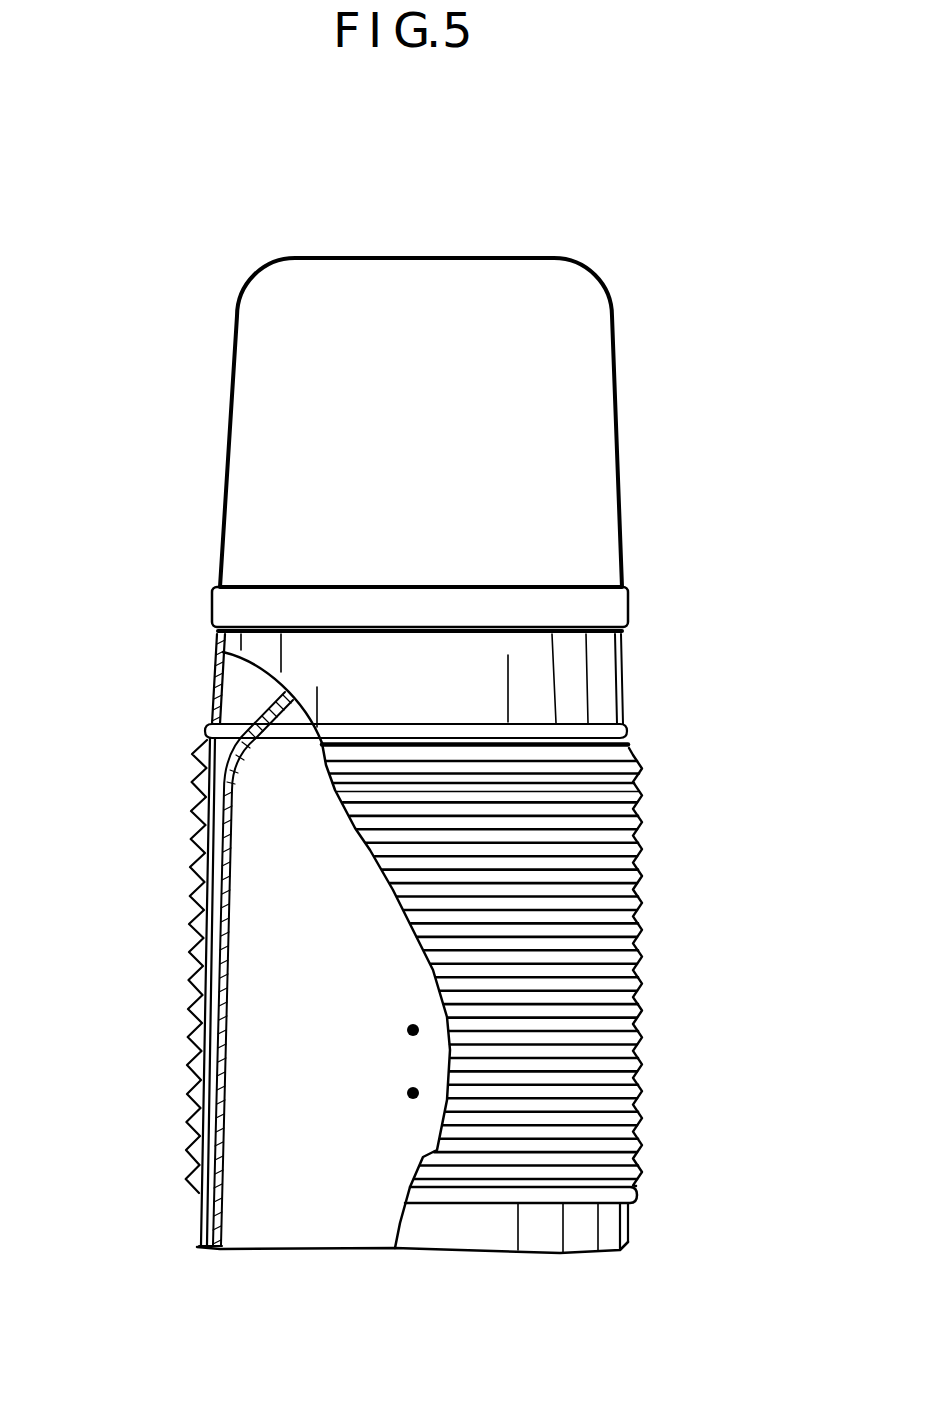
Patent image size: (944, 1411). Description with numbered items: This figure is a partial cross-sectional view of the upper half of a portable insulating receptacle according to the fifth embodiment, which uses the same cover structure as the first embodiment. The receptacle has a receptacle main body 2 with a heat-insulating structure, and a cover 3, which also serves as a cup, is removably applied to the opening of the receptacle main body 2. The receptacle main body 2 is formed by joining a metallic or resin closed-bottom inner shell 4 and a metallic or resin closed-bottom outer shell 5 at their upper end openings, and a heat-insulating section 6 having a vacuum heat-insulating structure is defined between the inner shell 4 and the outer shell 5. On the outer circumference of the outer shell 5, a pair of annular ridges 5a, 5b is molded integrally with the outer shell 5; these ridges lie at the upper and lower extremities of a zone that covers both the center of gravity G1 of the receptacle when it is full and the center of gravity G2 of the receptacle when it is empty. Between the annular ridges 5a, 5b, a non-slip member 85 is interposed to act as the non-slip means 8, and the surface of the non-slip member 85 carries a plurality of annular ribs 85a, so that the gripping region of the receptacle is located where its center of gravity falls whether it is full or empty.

The receptacle main body 2 is at (652, 1222).
The cover 3 is at (603, 433).
The inner shell 4 is at (228, 863).
The outer shell 5 is at (213, 693).
The annular ridge 5a is at (207, 728).
The annular ridge 5b is at (190, 1192).
The heat-insulating section 6 is at (203, 1220).
The non-slip means 8 is at (660, 889).
The non-slip member 85 is at (637, 812).
The annular rib 85a is at (640, 1033).
The center of gravity when full G1 is at (407, 1095).
The center of gravity when empty G2 is at (413, 1030).